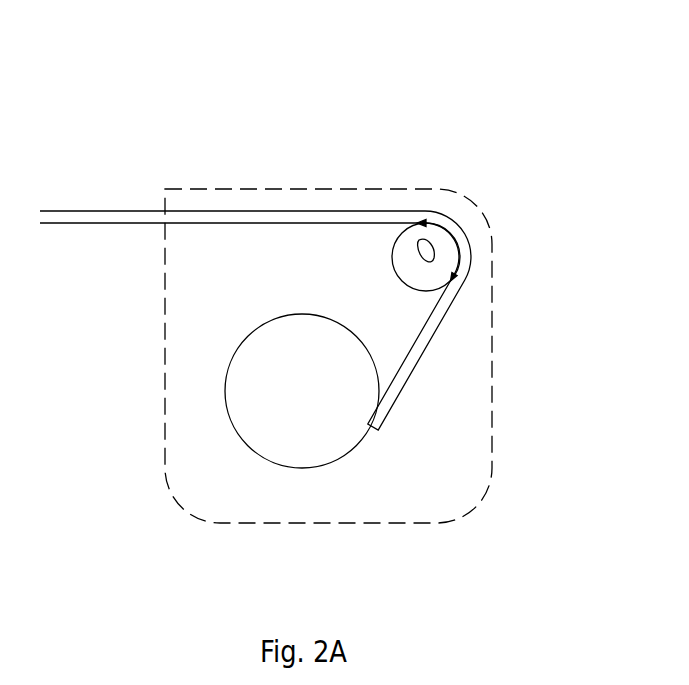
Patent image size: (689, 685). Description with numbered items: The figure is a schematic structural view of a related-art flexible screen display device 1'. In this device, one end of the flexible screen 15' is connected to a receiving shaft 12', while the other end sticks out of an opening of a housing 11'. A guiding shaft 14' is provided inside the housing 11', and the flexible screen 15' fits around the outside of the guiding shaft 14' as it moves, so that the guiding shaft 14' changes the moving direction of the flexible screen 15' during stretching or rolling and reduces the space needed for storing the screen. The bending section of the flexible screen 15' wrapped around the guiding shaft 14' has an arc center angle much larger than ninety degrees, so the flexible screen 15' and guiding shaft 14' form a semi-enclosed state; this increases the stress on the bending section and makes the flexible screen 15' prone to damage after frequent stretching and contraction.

The flexible screen display device 1' is at (296, 263).
The housing 11' is at (328, 305).
The receiving shaft 12' is at (229, 416).
The guiding shaft 14' is at (466, 202).
The flexible screen 15' is at (255, 270).